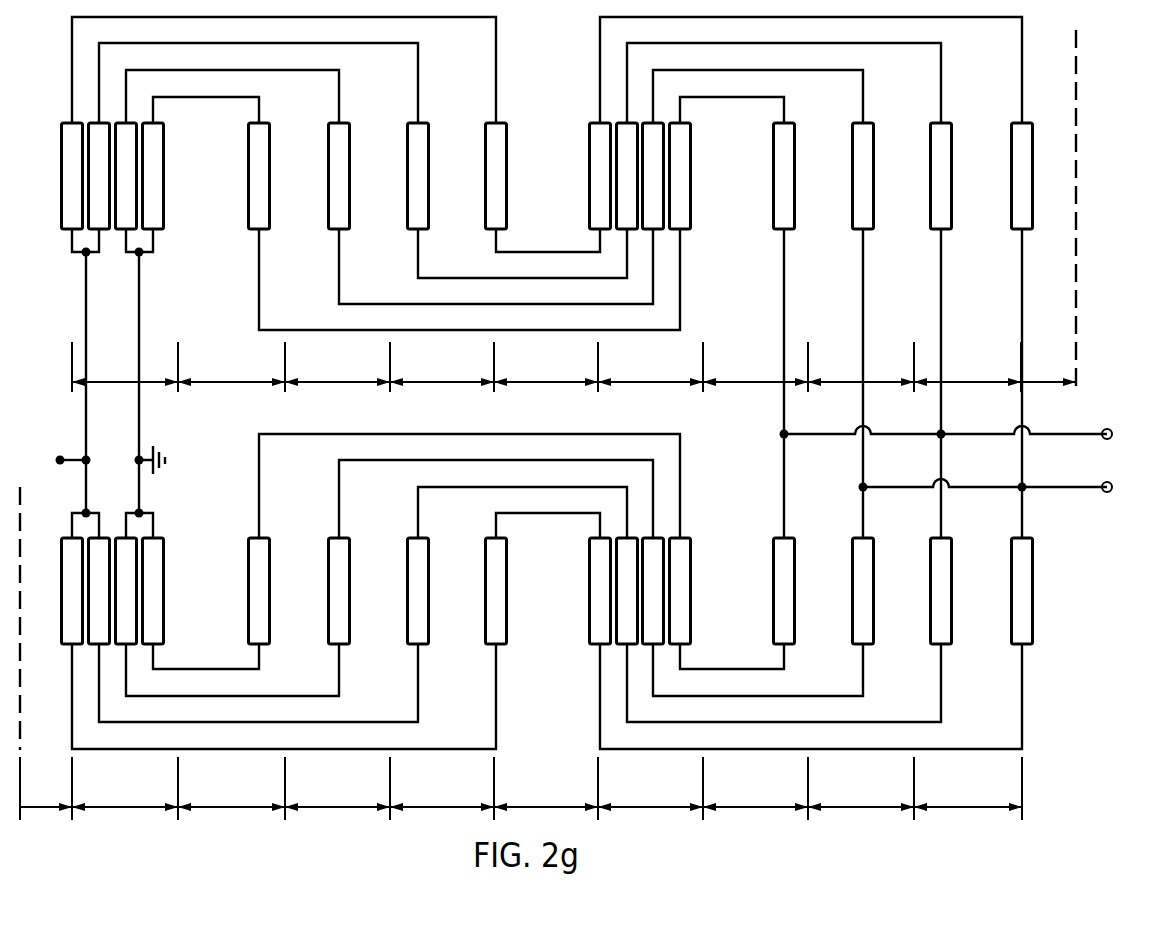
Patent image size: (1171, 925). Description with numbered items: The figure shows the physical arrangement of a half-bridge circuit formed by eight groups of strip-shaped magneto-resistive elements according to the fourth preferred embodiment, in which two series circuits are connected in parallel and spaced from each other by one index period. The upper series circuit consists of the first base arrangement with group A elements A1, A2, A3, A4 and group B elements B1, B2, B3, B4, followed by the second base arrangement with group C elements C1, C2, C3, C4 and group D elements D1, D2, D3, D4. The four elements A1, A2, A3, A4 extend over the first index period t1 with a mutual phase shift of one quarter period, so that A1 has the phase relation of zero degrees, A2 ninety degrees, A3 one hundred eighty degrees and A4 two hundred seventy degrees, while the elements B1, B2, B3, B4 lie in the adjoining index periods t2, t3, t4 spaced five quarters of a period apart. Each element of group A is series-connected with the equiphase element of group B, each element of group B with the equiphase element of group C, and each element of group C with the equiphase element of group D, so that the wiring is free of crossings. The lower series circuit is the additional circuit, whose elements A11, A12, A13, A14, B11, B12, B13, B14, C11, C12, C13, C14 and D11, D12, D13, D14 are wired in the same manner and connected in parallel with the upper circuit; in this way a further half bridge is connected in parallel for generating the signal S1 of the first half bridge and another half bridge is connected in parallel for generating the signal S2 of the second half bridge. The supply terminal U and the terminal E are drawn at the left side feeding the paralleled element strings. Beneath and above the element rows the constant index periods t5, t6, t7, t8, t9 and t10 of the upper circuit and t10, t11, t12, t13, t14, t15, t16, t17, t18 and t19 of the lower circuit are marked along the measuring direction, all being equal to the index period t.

The first magneto-resistive element A1 is at (72, 176).
The second magneto-resistive element A2 is at (99, 176).
The third magneto-resistive element A3 is at (126, 176).
The fourth magneto-resistive element A4 is at (153, 176).
The magneto-resistive element of second group B1 is at (496, 176).
The magneto-resistive element of second group B2 is at (418, 176).
The magneto-resistive element of second group B3 is at (339, 176).
The magneto-resistive element of second group B4 is at (259, 176).
The magneto-resistive element of third group C1 is at (600, 176).
The magneto-resistive element of third group C2 is at (627, 176).
The magneto-resistive element of third group C3 is at (653, 176).
The magneto-resistive element of third group C4 is at (680, 176).
The magneto-resistive element of fourth group D1 is at (1022, 176).
The magneto-resistive element of fourth group D2 is at (941, 176).
The magneto-resistive element of fourth group D3 is at (863, 176).
The magneto-resistive element of fourth group D4 is at (784, 176).
The magneto-resistive element of additional series circuit A11 is at (72, 591).
The magneto-resistive element of additional series circuit A12 is at (99, 591).
The magneto-resistive element of additional series circuit A13 is at (126, 591).
The magneto-resistive element of additional series circuit A14 is at (153, 591).
The magneto-resistive element of additional series circuit B11 is at (496, 591).
The magneto-resistive element of additional series circuit B12 is at (418, 591).
The magneto-resistive element of additional series circuit B13 is at (339, 591).
The magneto-resistive element of additional series circuit B14 is at (259, 591).
The magneto-resistive element of additional series circuit C11 is at (600, 591).
The magneto-resistive element of additional series circuit C12 is at (627, 591).
The magneto-resistive element of additional series circuit C13 is at (653, 591).
The magneto-resistive element of additional series circuit C14 is at (680, 591).
The magneto-resistive element of additional series circuit D11 is at (1022, 591).
The magneto-resistive element of additional series circuit D12 is at (941, 591).
The magneto-resistive element of additional series circuit D13 is at (863, 591).
The magneto-resistive element of additional series circuit D14 is at (784, 591).
The supply voltage terminal U is at (70, 481).
The ground terminal E is at (157, 476).
The signal of first half bridge S1 is at (1006, 488).
The signal of second half bridge S2 is at (967, 435).
The first index period t1 is at (125, 367).
The index period t2 is at (231, 367).
The index period t3 is at (337, 367).
The index period t4 is at (442, 367).
The index period t5 is at (546, 367).
The index period t6 is at (650, 367).
The index period t7 is at (755, 367).
The index period t8 is at (861, 367).
The index period t9 is at (967, 367).
The index period t10 is at (548, 586).
The index period t11 is at (125, 788).
The index period t12 is at (231, 788).
The index period t13 is at (337, 788).
The index period t14 is at (442, 788).
The index period t15 is at (546, 788).
The index period t16 is at (650, 788).
The index period t17 is at (755, 788).
The index period t18 is at (861, 788).
The index period t19 is at (968, 788).